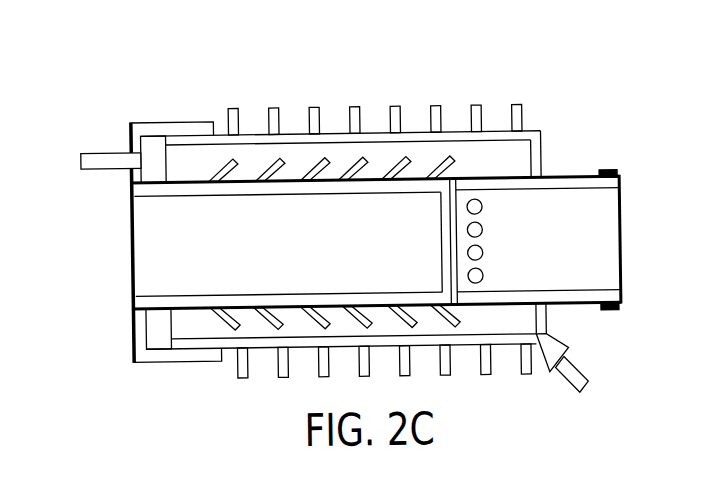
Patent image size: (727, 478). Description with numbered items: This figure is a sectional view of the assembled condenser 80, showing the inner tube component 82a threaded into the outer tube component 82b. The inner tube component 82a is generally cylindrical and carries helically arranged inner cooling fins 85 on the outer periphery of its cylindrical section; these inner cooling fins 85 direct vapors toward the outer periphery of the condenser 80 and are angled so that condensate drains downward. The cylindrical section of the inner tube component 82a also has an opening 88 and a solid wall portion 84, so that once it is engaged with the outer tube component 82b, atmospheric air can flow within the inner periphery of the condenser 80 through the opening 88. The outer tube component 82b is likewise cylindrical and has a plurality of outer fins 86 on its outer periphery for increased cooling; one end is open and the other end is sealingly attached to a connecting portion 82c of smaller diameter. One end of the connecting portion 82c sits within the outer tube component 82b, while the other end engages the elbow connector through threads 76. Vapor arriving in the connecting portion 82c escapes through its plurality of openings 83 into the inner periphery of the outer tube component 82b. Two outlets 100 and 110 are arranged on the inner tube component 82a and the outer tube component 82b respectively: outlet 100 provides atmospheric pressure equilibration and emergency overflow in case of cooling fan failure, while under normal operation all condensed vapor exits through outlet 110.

The condenser 80 is at (96, 72).
The outlet 100 is at (110, 146).
The outer fins 86 is at (278, 106).
The inner cooling fins 85 is at (447, 172).
The outer tube component 82b is at (543, 150).
The threads 76 is at (620, 176).
The connecting portion 82c is at (622, 216).
The inner tube component 82a is at (322, 193).
The solid wall portion 84 is at (441, 247).
The openings 83 is at (482, 256).
The opening 88 is at (131, 248).
The outlet 110 is at (588, 390).